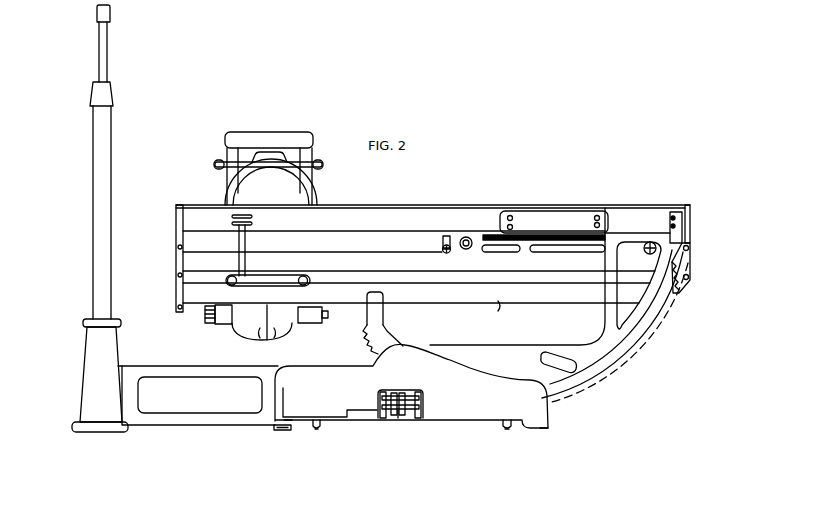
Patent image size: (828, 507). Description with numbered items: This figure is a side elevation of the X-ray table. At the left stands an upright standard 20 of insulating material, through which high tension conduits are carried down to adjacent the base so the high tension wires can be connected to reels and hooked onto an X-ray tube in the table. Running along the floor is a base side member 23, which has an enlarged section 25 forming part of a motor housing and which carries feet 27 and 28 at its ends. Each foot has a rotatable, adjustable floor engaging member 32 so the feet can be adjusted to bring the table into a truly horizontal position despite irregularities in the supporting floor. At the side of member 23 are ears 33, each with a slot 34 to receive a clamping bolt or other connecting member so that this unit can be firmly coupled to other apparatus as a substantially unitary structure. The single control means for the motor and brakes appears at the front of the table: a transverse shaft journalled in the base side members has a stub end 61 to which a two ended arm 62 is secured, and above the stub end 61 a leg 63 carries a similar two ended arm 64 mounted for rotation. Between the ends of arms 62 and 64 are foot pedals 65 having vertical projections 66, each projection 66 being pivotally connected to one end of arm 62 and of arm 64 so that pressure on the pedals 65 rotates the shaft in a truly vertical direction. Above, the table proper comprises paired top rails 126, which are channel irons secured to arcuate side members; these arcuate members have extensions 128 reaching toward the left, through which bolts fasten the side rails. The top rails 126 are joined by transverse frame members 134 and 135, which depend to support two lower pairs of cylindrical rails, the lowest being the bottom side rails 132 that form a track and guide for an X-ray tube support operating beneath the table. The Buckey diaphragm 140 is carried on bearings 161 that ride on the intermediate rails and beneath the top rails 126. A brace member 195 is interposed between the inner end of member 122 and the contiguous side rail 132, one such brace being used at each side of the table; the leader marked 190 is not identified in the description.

The upright standard 20 is at (93, 133).
The base side member 23 is at (466, 421).
The enlarged section 25 is at (318, 378).
The foot 27 is at (292, 422).
The foot 28 is at (548, 427).
The floor engaging member 32 is at (282, 428).
The ear 33 is at (321, 425).
The slot 34 is at (317, 429).
The stub end 61 is at (398, 419).
The two ended arm 62 is at (419, 407).
The leg 63 is at (403, 393).
The two ended arm 64 is at (394, 393).
The foot pedal 65 is at (382, 418).
The vertical projection 66 is at (382, 398).
The member 122 is at (606, 366).
The top rail 126 is at (367, 207).
The extension 128 is at (578, 211).
The bottom side rail 132 is at (500, 304).
The transverse frame member 134 is at (690, 212).
The transverse frame member 135 is at (177, 205).
The Buckey diaphragm 140 is at (478, 238).
The bearing 161 is at (446, 236).
The plate 190 is at (393, 257).
The brace member 195 is at (385, 322).